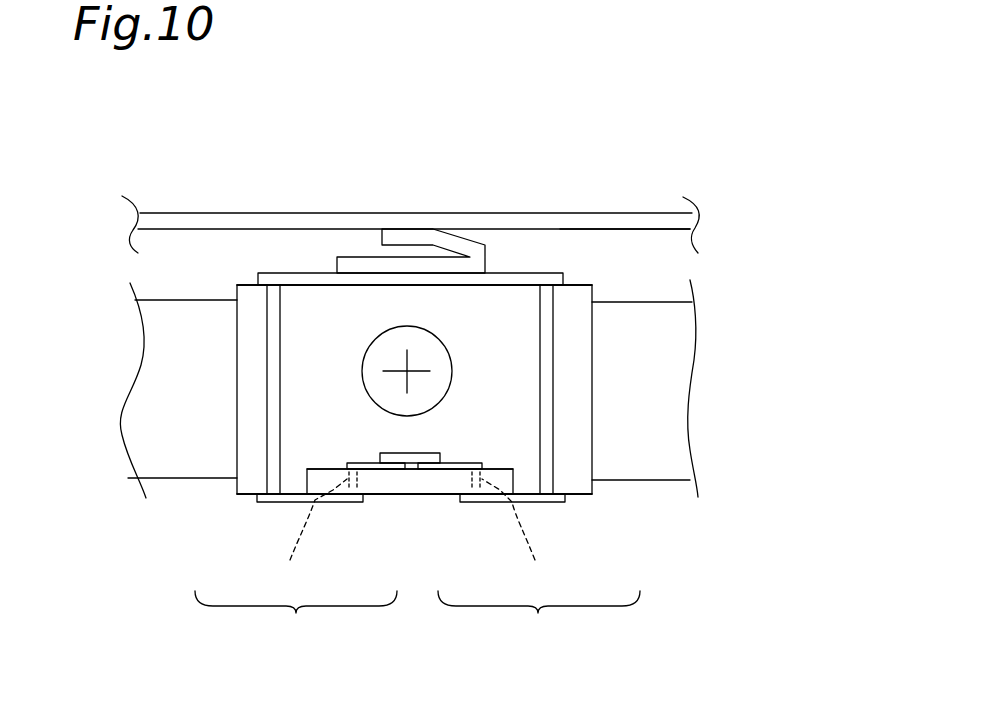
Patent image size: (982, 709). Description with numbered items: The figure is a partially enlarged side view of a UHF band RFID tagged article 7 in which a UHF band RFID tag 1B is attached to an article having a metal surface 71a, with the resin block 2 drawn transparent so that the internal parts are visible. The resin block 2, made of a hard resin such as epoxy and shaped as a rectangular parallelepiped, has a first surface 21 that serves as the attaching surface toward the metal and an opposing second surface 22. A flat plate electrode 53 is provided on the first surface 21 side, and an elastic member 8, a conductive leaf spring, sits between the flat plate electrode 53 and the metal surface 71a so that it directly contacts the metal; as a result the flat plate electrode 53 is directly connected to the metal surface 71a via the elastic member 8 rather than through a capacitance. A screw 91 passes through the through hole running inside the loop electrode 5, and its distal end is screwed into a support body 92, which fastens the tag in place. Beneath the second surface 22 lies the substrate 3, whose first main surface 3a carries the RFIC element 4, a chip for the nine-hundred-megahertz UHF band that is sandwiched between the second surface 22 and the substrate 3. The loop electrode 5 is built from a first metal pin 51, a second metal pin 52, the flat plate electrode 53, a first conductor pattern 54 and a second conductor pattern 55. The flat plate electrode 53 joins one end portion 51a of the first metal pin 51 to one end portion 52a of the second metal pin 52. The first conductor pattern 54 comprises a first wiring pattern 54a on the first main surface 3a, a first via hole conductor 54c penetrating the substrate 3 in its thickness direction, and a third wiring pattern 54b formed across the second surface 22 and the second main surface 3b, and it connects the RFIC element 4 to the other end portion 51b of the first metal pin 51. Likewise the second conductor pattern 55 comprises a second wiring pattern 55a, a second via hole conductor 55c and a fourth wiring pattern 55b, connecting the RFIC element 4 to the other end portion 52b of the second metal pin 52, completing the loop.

The UHF band RFID tagged article 7 is at (155, 156).
The metal surface 71a is at (628, 225).
The elastic member 8 is at (403, 235).
The flat plate electrode 53 is at (300, 277).
The screw 91 is at (385, 353).
The first surface 21 is at (567, 287).
The second surface 22 is at (580, 495).
The resin block 2 is at (582, 376).
The loop electrode 5 is at (590, 403).
The first metal pin 51 is at (270, 363).
The one end portion of the first metal pin 51a is at (272, 300).
The another end portion of the first metal pin 51b is at (268, 485).
The second metal pin 52 is at (547, 340).
The one end portion of the second metal pin 52a is at (547, 292).
The another end portion of the second metal pin 52b is at (547, 490).
The support body 92 is at (160, 315).
The substrate 3 is at (307, 469).
The first main surface of the substrate 3a is at (503, 462).
The second main surface of the substrate 3b is at (430, 494).
The RFIC element 4 is at (410, 462).
The first conductor pattern 54 is at (296, 621).
The first wiring pattern 54a is at (375, 465).
The third wiring pattern 54b is at (293, 502).
The first via hole conductor 54c is at (310, 537).
The second conductor pattern 55 is at (539, 621).
The second wiring pattern 55a is at (448, 466).
The fourth wiring pattern 55b is at (527, 503).
The second via hole conductor 55c is at (520, 537).
The UHF band RFID tag 1B is at (245, 515).